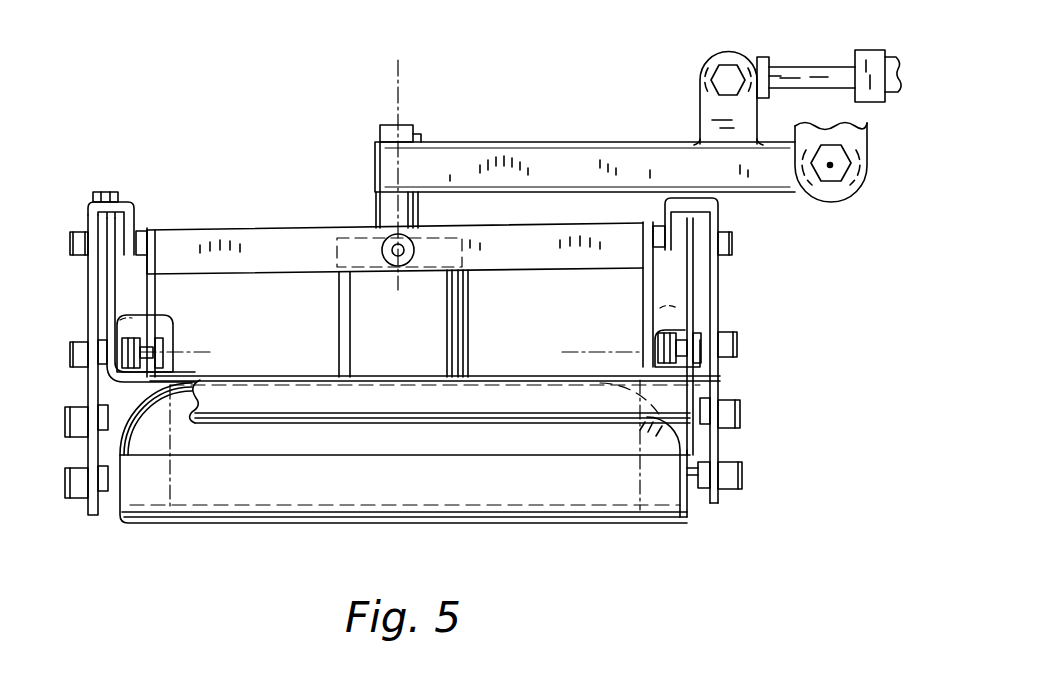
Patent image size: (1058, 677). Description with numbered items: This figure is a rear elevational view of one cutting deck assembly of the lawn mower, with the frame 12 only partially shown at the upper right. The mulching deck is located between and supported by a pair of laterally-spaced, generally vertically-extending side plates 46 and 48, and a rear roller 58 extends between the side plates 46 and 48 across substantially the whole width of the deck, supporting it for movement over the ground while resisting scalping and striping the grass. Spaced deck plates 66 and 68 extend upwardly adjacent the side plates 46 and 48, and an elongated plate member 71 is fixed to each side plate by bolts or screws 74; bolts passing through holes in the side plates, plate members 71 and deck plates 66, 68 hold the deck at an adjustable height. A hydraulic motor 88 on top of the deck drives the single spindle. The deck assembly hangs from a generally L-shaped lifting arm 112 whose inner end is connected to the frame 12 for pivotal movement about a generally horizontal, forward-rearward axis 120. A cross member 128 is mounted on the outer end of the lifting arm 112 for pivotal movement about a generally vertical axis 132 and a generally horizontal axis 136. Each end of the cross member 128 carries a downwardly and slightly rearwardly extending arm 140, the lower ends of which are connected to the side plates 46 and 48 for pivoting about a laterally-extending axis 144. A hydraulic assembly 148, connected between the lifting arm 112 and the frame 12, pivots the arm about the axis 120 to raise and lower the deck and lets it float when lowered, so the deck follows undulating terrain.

The frame 12 is at (855, 138).
The side plate 46 is at (88, 278).
The side plate 48 is at (718, 293).
The rear roller 58 is at (242, 492).
The deck plate 66 is at (110, 292).
The deck plate 68 is at (693, 268).
The plate member 71 is at (134, 214).
The bolts or screws 74 is at (120, 174).
The hydraulic motor 88 is at (345, 343).
The lifting arm 112 is at (600, 146).
The horizontal axis 120 is at (829, 167).
The cross member 128 is at (322, 262).
The vertical axis 132 is at (393, 72).
The horizontal axis 136 is at (406, 247).
The arm 140 is at (155, 298).
The horizontal laterally-extending axis 144 is at (241, 354).
The hydraulic assembly 148 is at (870, 55).